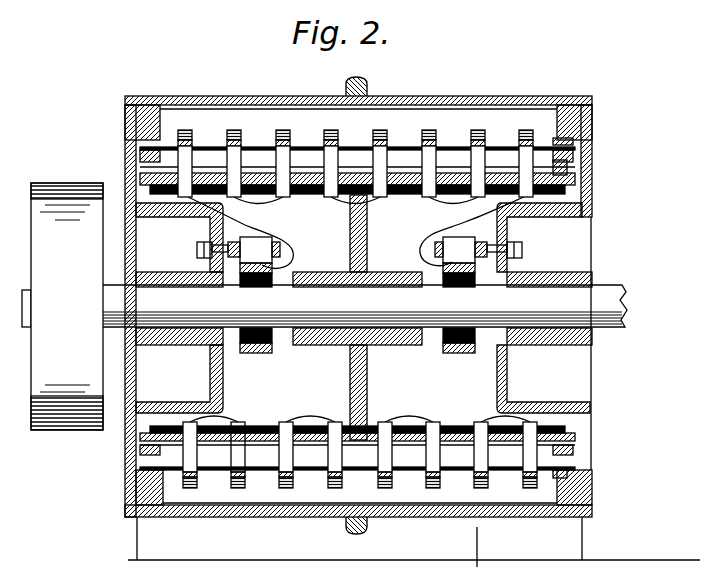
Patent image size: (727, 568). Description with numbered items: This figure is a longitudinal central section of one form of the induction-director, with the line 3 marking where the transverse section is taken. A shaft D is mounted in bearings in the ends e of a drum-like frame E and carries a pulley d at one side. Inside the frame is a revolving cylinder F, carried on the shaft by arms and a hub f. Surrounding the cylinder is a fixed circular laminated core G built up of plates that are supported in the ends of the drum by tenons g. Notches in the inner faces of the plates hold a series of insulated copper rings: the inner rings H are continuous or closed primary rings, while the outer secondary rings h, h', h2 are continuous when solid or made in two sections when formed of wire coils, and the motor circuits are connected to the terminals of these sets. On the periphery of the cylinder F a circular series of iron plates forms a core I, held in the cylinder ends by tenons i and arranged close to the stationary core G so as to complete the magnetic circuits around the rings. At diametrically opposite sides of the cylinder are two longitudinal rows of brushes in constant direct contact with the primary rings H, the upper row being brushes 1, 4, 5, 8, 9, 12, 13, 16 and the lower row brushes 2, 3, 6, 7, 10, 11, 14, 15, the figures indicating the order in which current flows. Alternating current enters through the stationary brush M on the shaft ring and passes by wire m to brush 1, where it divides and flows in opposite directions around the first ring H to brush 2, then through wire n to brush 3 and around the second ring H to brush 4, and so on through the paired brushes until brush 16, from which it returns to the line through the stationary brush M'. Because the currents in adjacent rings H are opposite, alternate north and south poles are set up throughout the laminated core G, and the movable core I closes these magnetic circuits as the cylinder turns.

The drum-like frame E is at (535, 96).
The ends of frame e is at (592, 203).
The tenons g is at (592, 123).
The tenons i is at (590, 160).
The inner rings H is at (192, 142).
The secondary ring h is at (254, 129).
The secondary ring h' is at (301, 129).
The secondary ring h2 is at (338, 136).
The fixed circular laminated core G is at (387, 136).
The core I is at (346, 251).
The iron core I' is at (459, 355).
The wire m is at (241, 232).
The wire m' is at (472, 231).
The stationary brush M is at (238, 262).
The stationary brush M' is at (460, 257).
The arms and hub f is at (350, 240).
The revolving cylinder F is at (357, 272).
The pulley d is at (67, 306).
The shaft D is at (627, 300).
The wire n is at (228, 418).
The brush 3 is at (469, 96).
The brush 1 is at (185, 163).
The brush 2 is at (190, 455).
The brush 4 is at (234, 163).
The brush 5 is at (283, 163).
The brush 6 is at (286, 455).
The brush 7 is at (335, 455).
The brush 8 is at (331, 163).
The brush 9 is at (380, 163).
The brush 10 is at (386, 455).
The brush 11 is at (434, 455).
The brush 12 is at (429, 163).
The brush 13 is at (478, 163).
The brush 14 is at (481, 455).
The brush 15 is at (530, 455).
The brush 16 is at (527, 163).